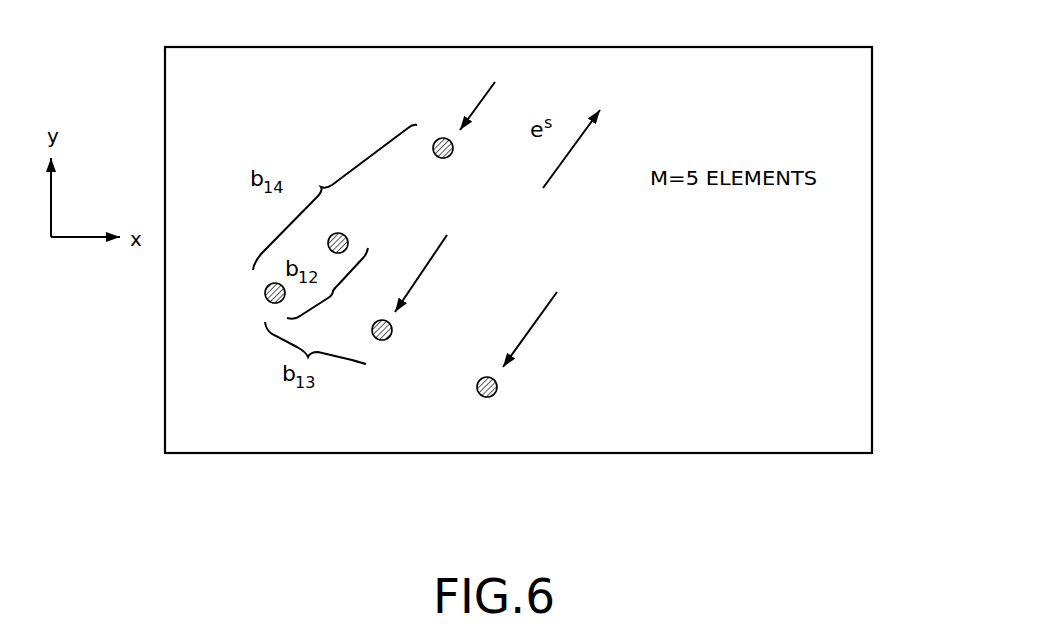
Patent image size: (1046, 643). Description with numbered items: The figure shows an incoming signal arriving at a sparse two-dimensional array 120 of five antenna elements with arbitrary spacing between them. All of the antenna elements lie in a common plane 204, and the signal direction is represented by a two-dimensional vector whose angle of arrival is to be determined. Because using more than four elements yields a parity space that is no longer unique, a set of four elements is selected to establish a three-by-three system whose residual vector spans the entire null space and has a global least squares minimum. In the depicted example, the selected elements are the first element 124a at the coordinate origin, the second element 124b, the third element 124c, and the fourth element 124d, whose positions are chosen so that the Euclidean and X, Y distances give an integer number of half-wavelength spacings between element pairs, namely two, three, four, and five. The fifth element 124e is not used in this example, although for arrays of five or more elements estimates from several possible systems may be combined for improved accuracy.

The two-dimensional array 120 is at (858, 392).
The common plane 204 is at (192, 430).
The first element 124a is at (267, 300).
The second element 124b is at (386, 340).
The third element 124c is at (438, 138).
The fourth element 124d is at (487, 397).
The fifth element 124e is at (342, 234).